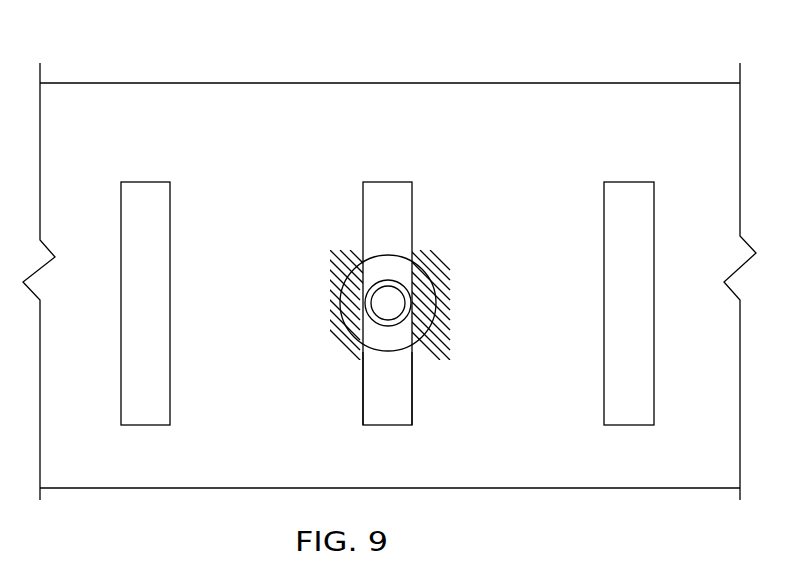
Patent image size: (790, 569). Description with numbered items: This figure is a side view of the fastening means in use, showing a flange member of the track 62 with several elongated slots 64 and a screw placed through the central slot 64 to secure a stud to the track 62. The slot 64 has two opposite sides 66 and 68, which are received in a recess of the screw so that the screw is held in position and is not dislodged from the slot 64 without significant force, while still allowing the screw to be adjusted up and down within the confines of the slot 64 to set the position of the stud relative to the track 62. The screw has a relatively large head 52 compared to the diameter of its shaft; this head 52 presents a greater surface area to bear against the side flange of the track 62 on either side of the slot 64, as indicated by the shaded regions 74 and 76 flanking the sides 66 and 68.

The track 62 is at (195, 82).
The slot 64 is at (170, 204).
The head 52 is at (366, 250).
The shaded region 74 is at (341, 301).
The shaded region 76 is at (427, 302).
The side of slot 66 is at (361, 378).
The side of slot 68 is at (411, 375).